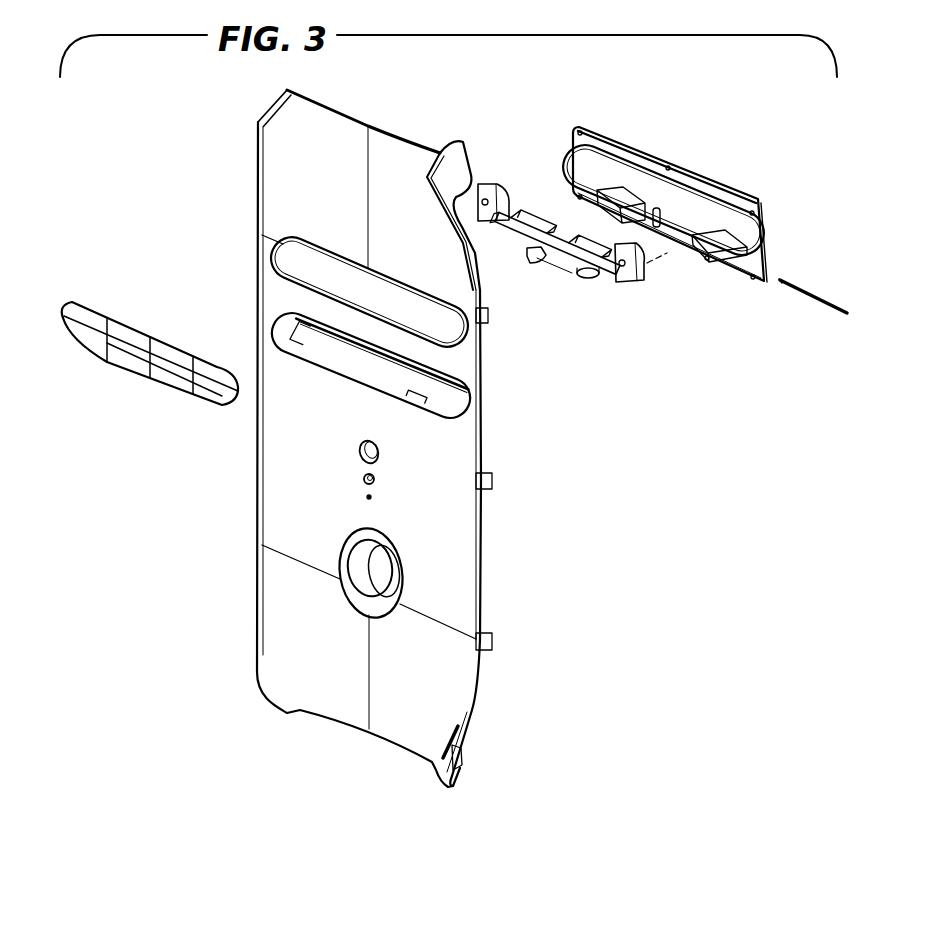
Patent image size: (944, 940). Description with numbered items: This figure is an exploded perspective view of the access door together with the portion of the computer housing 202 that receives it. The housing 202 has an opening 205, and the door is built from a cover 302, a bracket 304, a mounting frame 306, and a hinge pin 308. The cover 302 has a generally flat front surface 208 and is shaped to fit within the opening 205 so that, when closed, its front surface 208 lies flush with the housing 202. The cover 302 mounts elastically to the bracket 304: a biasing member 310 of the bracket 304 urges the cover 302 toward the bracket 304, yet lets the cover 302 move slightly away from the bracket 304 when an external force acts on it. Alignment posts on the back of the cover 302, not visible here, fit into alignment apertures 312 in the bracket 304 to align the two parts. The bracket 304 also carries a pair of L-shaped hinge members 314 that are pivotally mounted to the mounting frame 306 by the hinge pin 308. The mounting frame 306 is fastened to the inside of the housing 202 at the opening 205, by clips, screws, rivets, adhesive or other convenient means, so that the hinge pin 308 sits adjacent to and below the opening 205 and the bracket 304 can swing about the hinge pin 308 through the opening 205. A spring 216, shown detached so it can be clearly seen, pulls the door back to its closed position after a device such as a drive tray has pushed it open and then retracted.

The computer housing 202 is at (270, 190).
The opening 205 is at (322, 264).
The front surface 208 is at (170, 352).
The cover 302 is at (115, 365).
The spring 216 is at (665, 220).
The bracket 304 is at (613, 280).
The mounting frame 306 is at (732, 272).
The hinge pin 308 is at (807, 300).
The biasing member 310 is at (545, 222).
The alignment apertures 312 is at (478, 202).
The L-shaped hinge members 314 is at (528, 264).